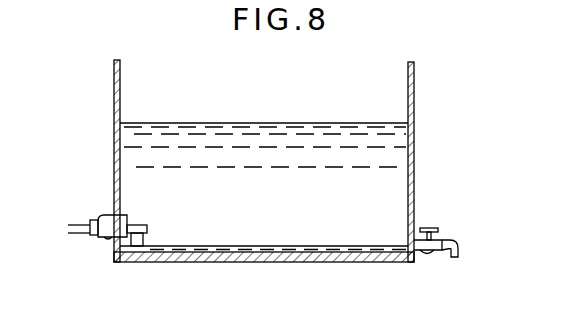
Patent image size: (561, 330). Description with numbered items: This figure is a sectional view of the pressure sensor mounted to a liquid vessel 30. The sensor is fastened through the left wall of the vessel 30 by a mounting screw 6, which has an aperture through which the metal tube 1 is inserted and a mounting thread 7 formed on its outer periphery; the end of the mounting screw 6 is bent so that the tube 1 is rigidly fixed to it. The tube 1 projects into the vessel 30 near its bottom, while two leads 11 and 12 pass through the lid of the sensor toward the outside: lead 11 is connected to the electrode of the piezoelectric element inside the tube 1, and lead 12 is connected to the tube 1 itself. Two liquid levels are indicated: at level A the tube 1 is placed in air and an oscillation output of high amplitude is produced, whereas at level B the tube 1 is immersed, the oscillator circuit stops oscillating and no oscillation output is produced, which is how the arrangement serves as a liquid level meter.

The liquid vessel 30 is at (114, 90).
The liquid level B is at (382, 123).
The liquid level A is at (362, 246).
The lead 12 is at (78, 233).
The lead 11 is at (78, 220).
The mounting screw 6 is at (105, 239).
The mounting thread 7 is at (131, 238).
The metal tube 1 is at (143, 246).